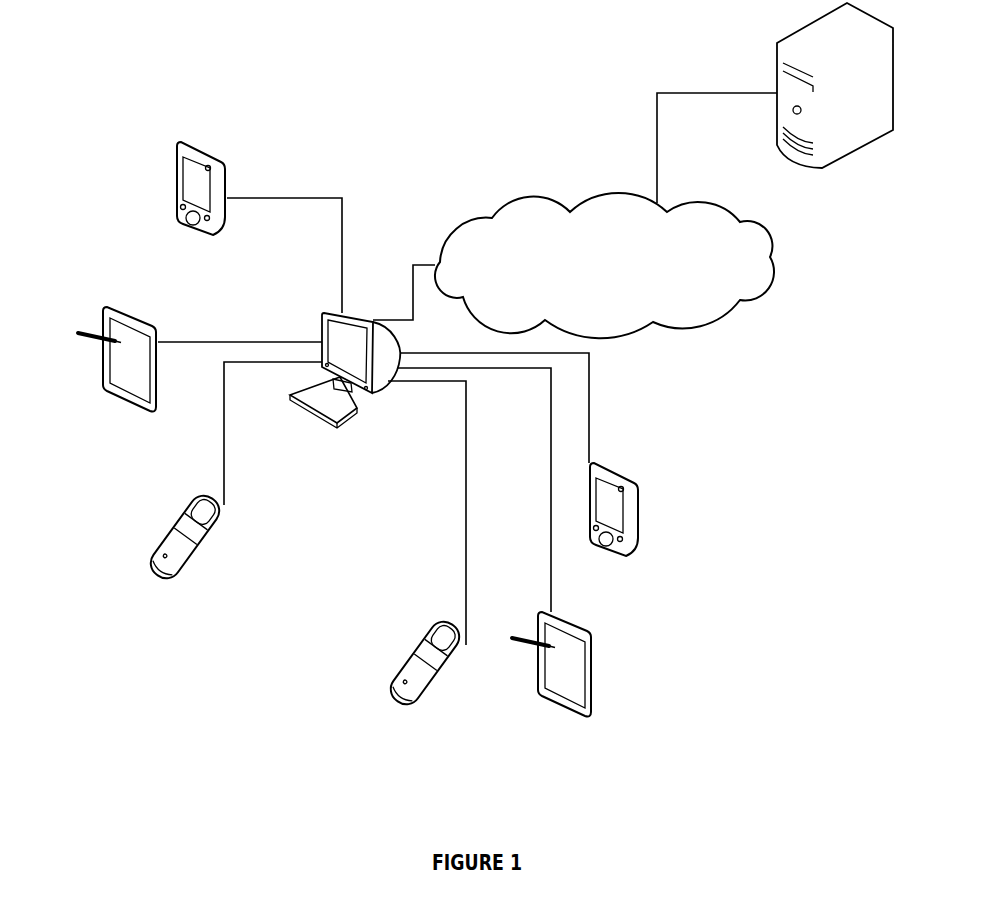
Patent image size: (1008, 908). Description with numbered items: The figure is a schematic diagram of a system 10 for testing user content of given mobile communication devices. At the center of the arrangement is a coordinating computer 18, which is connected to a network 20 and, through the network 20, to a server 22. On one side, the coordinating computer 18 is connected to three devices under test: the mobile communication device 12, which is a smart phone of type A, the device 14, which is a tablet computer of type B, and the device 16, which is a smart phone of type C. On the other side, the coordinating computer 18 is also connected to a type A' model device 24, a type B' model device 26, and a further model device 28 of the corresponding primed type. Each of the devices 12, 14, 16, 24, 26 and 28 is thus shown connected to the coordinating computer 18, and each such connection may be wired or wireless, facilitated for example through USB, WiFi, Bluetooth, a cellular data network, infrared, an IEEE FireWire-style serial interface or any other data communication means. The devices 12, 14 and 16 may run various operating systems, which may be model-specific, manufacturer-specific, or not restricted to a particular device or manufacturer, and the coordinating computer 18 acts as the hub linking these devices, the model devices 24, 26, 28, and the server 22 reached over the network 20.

The system 10 is at (427, 75).
The mobile communication device 12 is at (628, 473).
The mobile communication device 14 is at (592, 632).
The mobile communication device 16 is at (385, 678).
The coordinating computer 18 is at (322, 313).
The network 20 is at (613, 193).
The server 22 is at (777, 43).
The type A' model device 24 is at (185, 140).
The type B' model device 26 is at (115, 303).
The type C' model device 28 is at (152, 543).